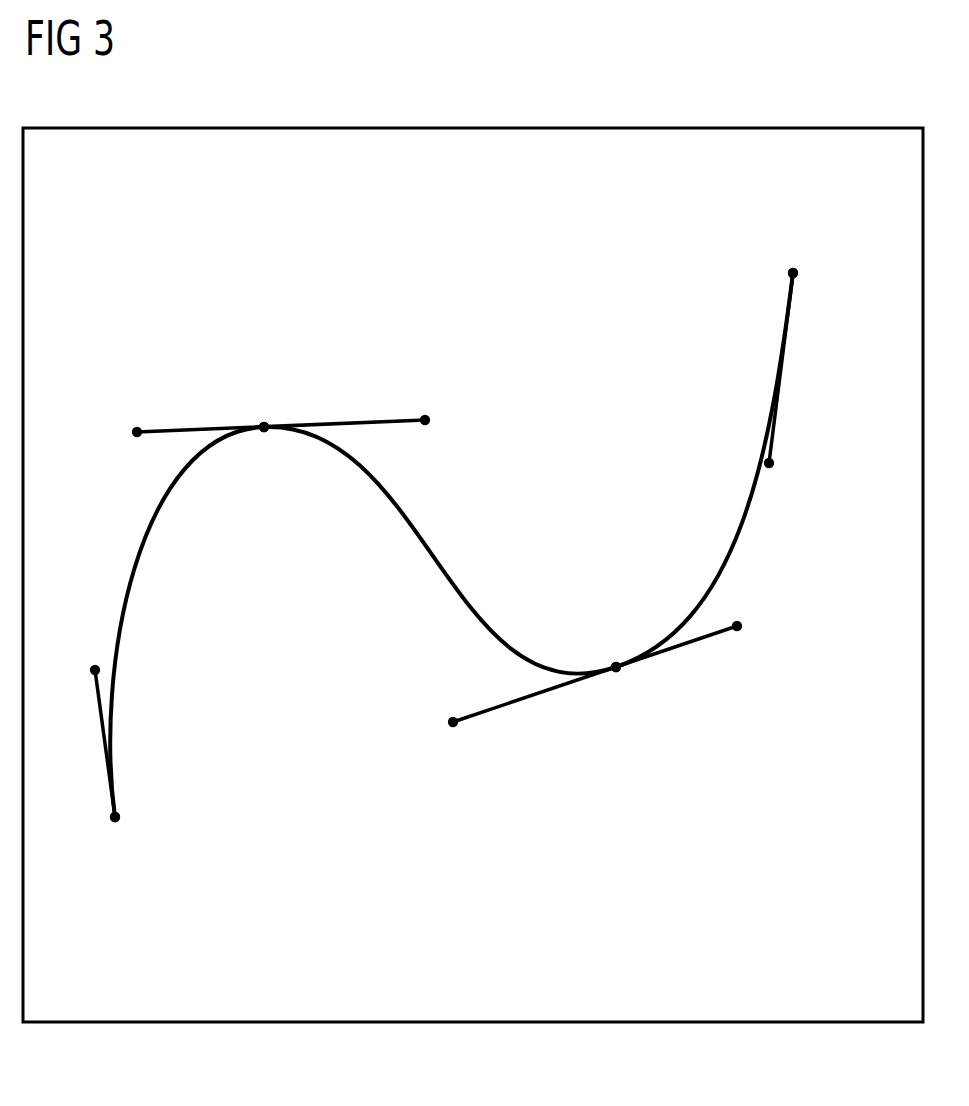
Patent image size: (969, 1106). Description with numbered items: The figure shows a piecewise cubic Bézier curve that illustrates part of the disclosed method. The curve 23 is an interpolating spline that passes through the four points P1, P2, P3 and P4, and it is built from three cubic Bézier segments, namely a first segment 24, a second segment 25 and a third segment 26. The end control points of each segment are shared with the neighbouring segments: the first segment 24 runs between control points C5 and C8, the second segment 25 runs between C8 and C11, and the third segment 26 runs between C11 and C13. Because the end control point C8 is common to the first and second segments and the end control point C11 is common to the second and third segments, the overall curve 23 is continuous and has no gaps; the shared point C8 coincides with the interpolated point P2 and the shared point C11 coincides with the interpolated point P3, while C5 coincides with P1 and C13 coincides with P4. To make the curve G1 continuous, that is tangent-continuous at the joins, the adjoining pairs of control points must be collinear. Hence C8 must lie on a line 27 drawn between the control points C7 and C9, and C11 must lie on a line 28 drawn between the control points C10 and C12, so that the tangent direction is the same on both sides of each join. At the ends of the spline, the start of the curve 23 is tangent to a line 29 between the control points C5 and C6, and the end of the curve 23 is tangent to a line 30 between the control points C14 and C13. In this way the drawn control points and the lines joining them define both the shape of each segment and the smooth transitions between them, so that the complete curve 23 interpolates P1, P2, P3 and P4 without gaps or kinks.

The curve 23 is at (433, 506).
The first cubic Bézier segment 24 is at (129, 582).
The second cubic Bézier segment 25 is at (437, 560).
The third cubic Bézier segment 26 is at (743, 512).
The line between C7 and C9 27 is at (179, 429).
The line between C10 and C12 28 is at (502, 704).
The line between C5 and C6 29 is at (102, 730).
The line between C14 and C13 30 is at (773, 443).
The control point C5 is at (115, 837).
The control point C6 is at (97, 654).
The control point C7 is at (119, 431).
The end control point C8 is at (266, 409).
The control point C9 is at (444, 419).
The control point C10 is at (430, 721).
The end control point C11 is at (617, 649).
The control point C12 is at (764, 622).
The control point C13 is at (768, 274).
The control point C14 is at (794, 464).
The interpolated point P1 is at (115, 854).
The interpolated point P2 is at (265, 446).
The interpolated point P3 is at (615, 687).
The interpolated point P4 is at (811, 274).